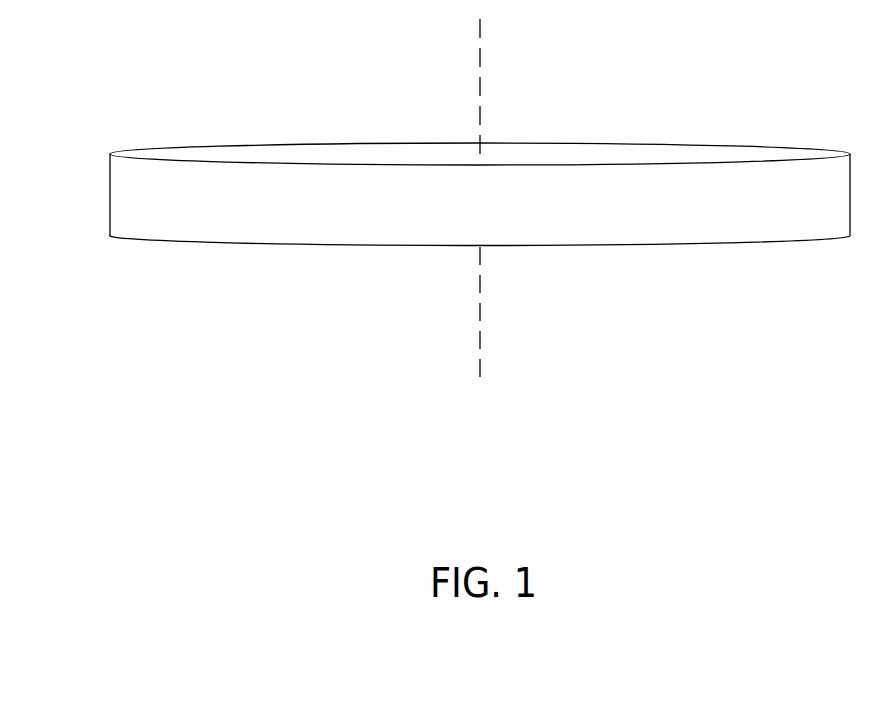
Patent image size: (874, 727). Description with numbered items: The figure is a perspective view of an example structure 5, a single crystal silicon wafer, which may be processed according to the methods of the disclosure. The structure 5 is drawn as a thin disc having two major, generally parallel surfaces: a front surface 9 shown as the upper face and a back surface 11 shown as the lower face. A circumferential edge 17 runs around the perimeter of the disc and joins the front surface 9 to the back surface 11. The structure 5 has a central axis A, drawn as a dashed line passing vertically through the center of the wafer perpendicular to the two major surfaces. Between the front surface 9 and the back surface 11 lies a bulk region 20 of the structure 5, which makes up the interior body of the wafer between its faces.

The structure 5 is at (222, 78).
The central axis A is at (480, 57).
The bulk region 20 is at (132, 199).
The front surface 9 is at (618, 153).
The back surface 11 is at (352, 245).
The circumferential edge 17 is at (705, 206).